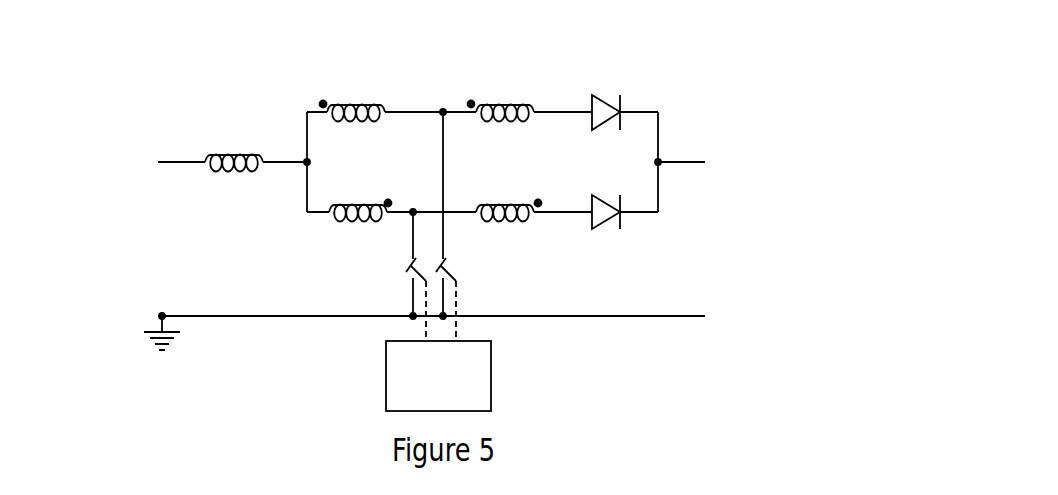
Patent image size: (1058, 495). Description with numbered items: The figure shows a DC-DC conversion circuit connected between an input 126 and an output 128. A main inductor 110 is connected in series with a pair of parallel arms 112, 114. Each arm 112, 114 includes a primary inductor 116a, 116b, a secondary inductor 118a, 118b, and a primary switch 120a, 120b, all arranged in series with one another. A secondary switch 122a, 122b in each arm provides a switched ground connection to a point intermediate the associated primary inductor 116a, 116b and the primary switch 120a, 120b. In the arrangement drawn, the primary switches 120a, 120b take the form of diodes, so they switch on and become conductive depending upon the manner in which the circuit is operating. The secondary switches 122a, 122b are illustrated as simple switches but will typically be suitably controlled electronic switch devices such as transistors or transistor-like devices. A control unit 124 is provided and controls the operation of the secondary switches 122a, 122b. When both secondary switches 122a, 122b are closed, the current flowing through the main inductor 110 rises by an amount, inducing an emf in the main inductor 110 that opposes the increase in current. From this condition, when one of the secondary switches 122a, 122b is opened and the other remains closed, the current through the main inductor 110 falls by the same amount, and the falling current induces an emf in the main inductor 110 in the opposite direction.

The main inductor 110 is at (225, 142).
The parallel arm 112 is at (660, 80).
The parallel arm 114 is at (310, 223).
The primary inductor 116a is at (355, 95).
The primary inductor 116b is at (358, 193).
The secondary inductor 118a is at (505, 93).
The secondary inductor 118b is at (500, 193).
The primary switch 120a is at (605, 93).
The primary switch 120b is at (606, 193).
The secondary switch 122a is at (440, 263).
The secondary switch 122b is at (403, 262).
The control unit 124 is at (386, 371).
The input 126 is at (165, 220).
The output 128 is at (718, 247).